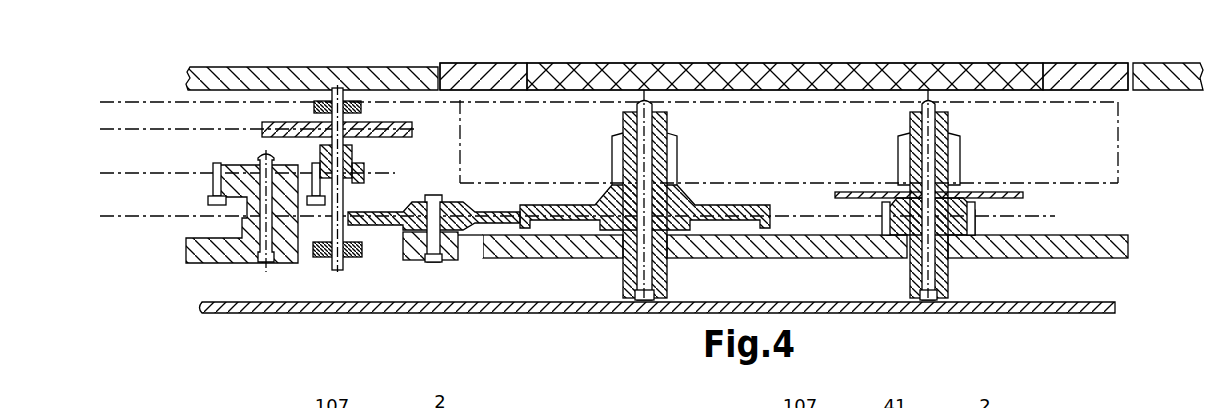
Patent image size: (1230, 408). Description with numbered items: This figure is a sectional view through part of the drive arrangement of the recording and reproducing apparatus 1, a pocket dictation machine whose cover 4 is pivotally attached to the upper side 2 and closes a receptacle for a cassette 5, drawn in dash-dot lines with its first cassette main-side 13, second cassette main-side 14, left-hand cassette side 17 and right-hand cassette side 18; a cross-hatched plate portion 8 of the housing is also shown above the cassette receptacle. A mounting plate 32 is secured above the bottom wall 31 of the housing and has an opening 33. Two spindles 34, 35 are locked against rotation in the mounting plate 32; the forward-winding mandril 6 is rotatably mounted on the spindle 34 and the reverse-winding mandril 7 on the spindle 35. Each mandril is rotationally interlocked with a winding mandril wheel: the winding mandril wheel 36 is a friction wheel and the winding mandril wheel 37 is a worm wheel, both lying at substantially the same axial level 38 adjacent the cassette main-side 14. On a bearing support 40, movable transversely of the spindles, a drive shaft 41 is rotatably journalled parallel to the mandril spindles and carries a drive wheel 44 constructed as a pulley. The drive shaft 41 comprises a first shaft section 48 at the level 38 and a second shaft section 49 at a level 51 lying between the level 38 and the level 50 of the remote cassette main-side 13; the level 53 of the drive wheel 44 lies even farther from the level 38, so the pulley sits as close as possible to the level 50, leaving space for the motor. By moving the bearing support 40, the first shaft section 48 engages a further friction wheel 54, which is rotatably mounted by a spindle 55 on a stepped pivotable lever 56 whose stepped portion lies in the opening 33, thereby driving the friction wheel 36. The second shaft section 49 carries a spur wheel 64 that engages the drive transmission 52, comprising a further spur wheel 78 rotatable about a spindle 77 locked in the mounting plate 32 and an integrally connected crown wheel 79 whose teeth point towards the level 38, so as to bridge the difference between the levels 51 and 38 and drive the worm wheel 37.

The recording and reproducing apparatus 1 is at (1085, 316).
The upper side 2 is at (367, 67).
The cover 4 is at (1083, 70).
The cassette 5 is at (1125, 140).
The forward-winding mandril 6 is at (660, 160).
The reverse-winding mandril 7 is at (948, 154).
The perforated plate 8 is at (773, 63).
The first cassette main-side 13 is at (1090, 101).
The second cassette main-side 14 is at (1095, 183).
The left-hand cassette side 17 is at (1118, 154).
The right-hand cassette side 18 is at (460, 152).
The bottom wall 31 is at (1105, 306).
The mounting plate 32 is at (1128, 251).
The opening 33 is at (482, 255).
The spindle 34 is at (652, 106).
The spindle 35 is at (935, 106).
The winding mandril wheel 36 is at (767, 213).
The winding mandril wheel 37 is at (975, 217).
The axial level 38 is at (150, 218).
The bearing support 40 is at (314, 258).
The drive shaft 41 is at (338, 258).
The drive wheel 44 is at (390, 121).
The first shaft section 48 is at (343, 212).
The second shaft section 49 is at (362, 175).
The level 50 is at (157, 102).
The level 51 is at (156, 173).
The drive transmission 52 is at (200, 189).
The level 53 is at (158, 129).
The further friction wheel 54 is at (480, 212).
The spindle 55 is at (432, 195).
The stepped pivotable lever 56 is at (438, 257).
The spur wheel 64 is at (358, 170).
The spindle 77 is at (262, 165).
The further spur wheel 78 is at (217, 165).
The crown wheel 79 is at (215, 218).